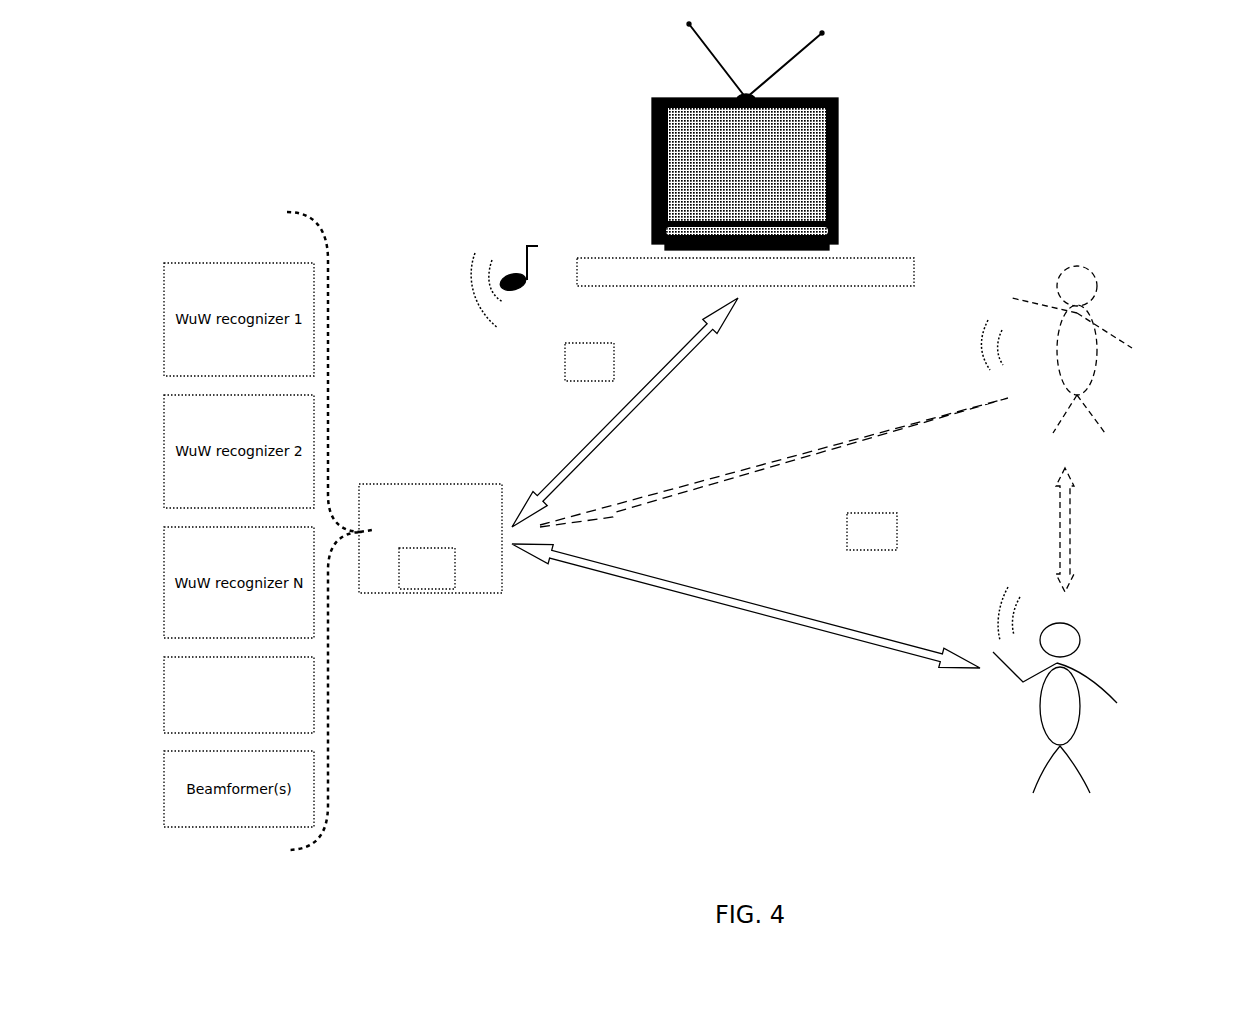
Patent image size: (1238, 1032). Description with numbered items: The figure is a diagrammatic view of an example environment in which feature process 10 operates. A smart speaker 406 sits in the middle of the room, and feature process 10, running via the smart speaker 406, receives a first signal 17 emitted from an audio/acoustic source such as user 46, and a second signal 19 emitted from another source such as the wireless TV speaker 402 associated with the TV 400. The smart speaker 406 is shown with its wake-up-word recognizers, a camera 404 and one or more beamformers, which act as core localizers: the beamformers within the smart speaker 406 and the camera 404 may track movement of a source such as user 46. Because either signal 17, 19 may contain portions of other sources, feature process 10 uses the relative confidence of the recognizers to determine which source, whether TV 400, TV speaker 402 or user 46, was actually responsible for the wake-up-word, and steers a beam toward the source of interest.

The TV 400 is at (860, 135).
The wireless TV speaker 402 is at (918, 268).
The camera 404 is at (164, 694).
The smart speaker 406 is at (503, 587).
The feature process 10 is at (427, 568).
The signal 19 is at (563, 362).
The signal 17 is at (845, 530).
The user 46 is at (1160, 342).